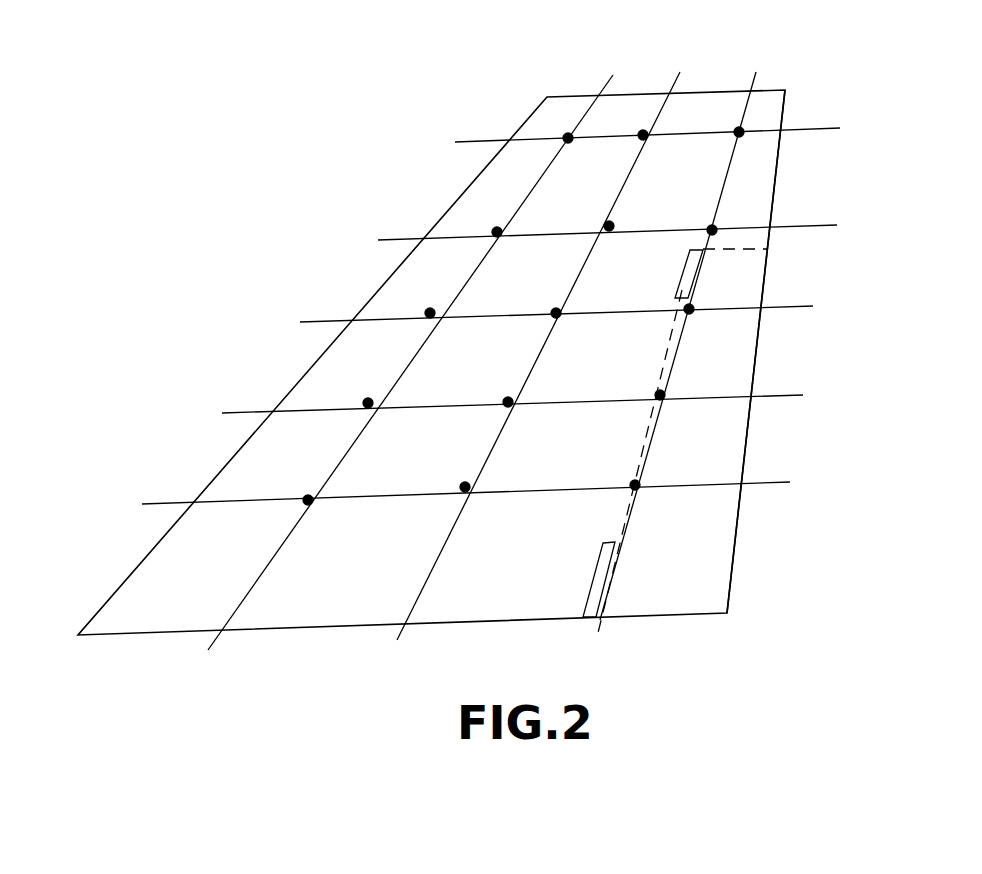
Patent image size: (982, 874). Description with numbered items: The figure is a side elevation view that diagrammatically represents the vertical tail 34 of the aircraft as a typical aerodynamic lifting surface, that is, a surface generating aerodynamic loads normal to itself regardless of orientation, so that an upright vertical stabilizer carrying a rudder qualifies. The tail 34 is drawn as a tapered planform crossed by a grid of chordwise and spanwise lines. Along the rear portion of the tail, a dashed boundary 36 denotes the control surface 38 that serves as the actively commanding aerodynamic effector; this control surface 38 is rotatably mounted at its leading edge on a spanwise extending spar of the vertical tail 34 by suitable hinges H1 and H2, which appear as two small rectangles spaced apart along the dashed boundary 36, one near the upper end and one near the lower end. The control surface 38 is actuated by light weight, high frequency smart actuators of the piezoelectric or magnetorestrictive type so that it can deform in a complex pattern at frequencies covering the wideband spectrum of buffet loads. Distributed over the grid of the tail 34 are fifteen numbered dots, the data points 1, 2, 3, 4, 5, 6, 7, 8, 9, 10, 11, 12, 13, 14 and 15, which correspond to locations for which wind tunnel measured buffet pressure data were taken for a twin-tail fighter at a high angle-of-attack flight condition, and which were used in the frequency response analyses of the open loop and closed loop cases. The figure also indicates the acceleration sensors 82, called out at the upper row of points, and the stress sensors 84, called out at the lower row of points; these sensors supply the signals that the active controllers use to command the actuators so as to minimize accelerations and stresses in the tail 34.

The vertical tail 34 is at (392, 160).
The dashed boundary 36 is at (665, 363).
The control surface 38 is at (728, 452).
The acceleration sensors 82 is at (653, 94).
The stress sensors 84 is at (473, 521).
The hinge H1 is at (610, 580).
The hinge H2 is at (693, 275).
The data point 1 is at (727, 148).
The data point 2 is at (630, 150).
The data point 3 is at (571, 152).
The data point 4 is at (704, 215).
The data point 5 is at (604, 243).
The data point 6 is at (503, 247).
The data point 7 is at (697, 323).
The data point 8 is at (564, 327).
The data point 9 is at (421, 328).
The data point 10 is at (678, 409).
The data point 11 is at (488, 417).
The data point 12 is at (348, 419).
The data point 13 is at (656, 499).
The data point 14 is at (447, 503).
The data point 15 is at (288, 512).